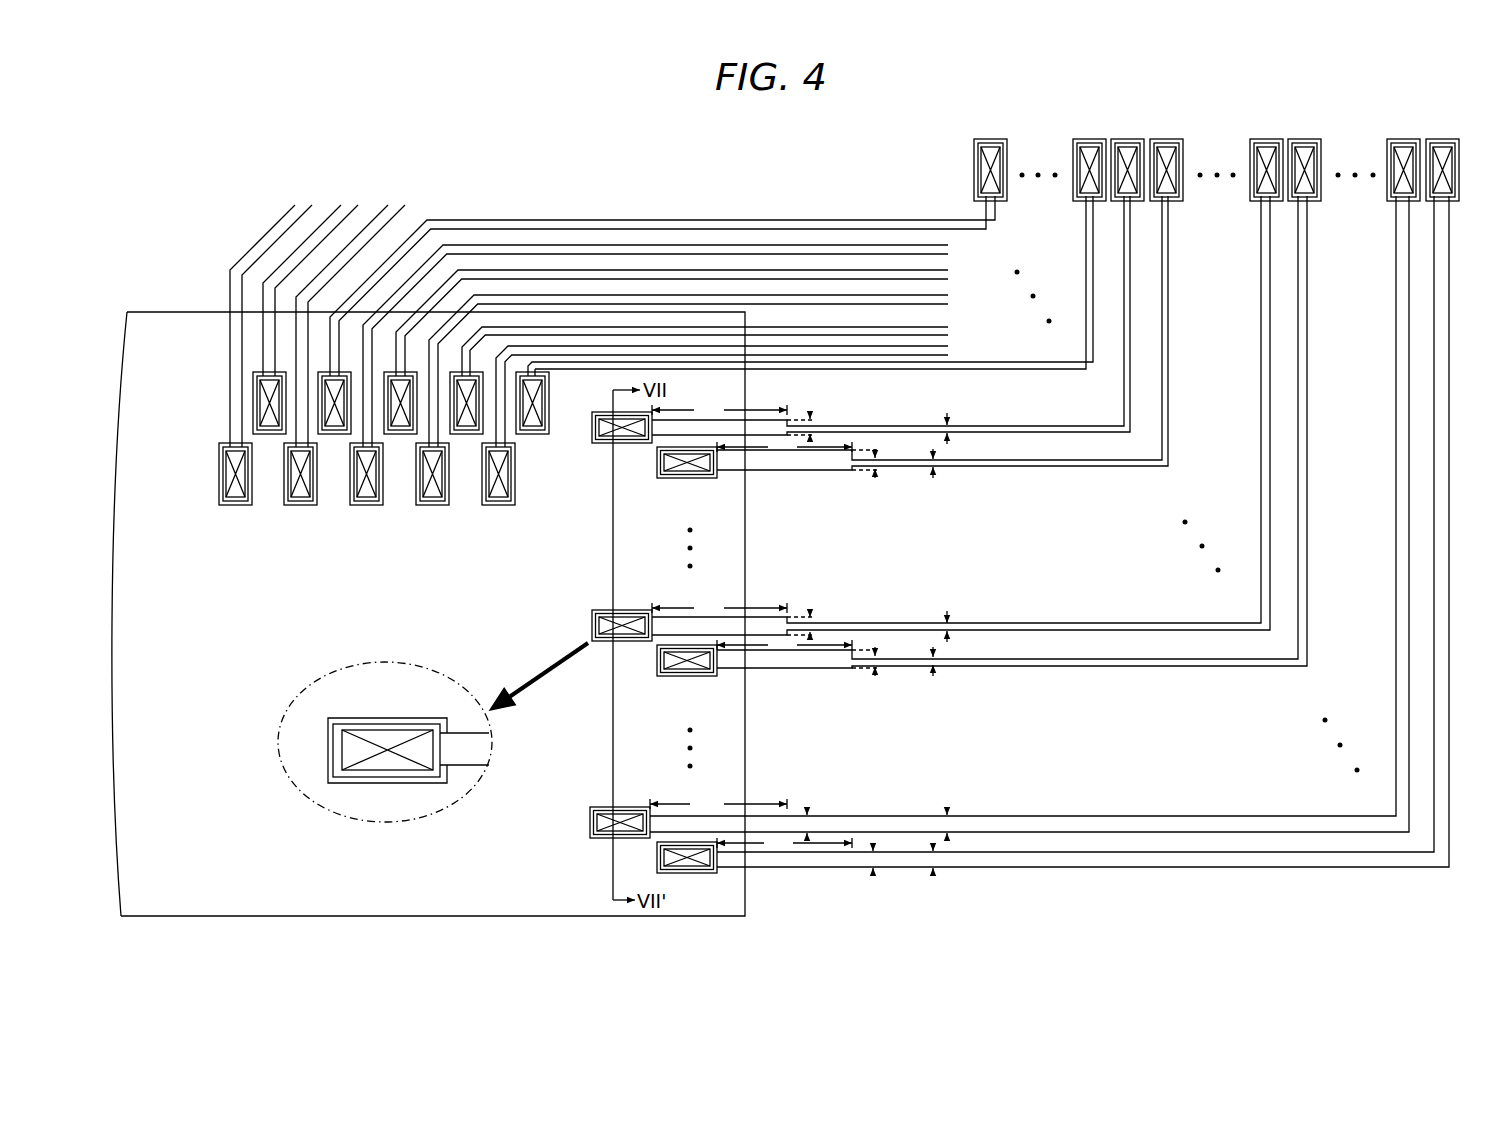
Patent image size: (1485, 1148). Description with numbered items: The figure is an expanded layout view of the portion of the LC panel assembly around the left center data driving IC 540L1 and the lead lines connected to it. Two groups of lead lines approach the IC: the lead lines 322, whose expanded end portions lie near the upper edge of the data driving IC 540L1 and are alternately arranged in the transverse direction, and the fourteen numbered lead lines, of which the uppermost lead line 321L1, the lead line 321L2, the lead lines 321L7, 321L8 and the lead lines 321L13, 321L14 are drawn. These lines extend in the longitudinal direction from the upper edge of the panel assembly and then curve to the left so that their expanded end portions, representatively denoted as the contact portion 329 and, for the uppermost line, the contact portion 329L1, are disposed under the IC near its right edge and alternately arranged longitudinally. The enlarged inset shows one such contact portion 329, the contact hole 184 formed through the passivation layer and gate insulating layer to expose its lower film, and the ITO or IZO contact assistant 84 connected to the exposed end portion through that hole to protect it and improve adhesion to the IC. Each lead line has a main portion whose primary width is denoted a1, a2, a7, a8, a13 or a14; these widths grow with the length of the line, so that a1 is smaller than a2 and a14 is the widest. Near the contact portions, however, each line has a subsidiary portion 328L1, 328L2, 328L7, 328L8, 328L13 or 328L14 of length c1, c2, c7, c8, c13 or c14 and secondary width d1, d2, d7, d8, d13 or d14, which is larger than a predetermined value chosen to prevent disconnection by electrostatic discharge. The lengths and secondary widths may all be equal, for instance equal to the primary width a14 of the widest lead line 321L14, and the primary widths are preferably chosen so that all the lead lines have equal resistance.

The left center data driving IC 540L1 is at (160, 310).
The lead lines 322 is at (778, 217).
The uppermost lead line 321L1 is at (1130, 283).
The lead line 321L2 is at (1169, 320).
The lead line 321L7 is at (1261, 437).
The lead line 321L8 is at (1298, 480).
The lead line 321L13 is at (1396, 634).
The widest lead line 321L14 is at (1434, 678).
The contact portion of uppermost lead line 329L1 is at (600, 413).
The contact assistant 84 is at (593, 433).
The contact hole 184 is at (615, 447).
The contact portion 329 is at (420, 724).
The subsidiary portion 328L1 is at (768, 420).
The subsidiary portion 328L2 is at (780, 471).
The subsidiary portion 328L7 is at (768, 617).
The subsidiary portion 328L8 is at (780, 669).
The subsidiary portion 328L13 is at (768, 816).
The subsidiary portion 328L14 is at (780, 868).
The length of subsidiary portion c1 is at (719, 410).
The secondary width d1 is at (822, 426).
The primary width a1 is at (959, 428).
The length of subsidiary portion c2 is at (784, 447).
The secondary width d2 is at (887, 463).
The primary width a2 is at (945, 463).
The length of subsidiary portion c7 is at (719, 608).
The secondary width d7 is at (822, 624).
The primary width a7 is at (959, 626).
The length of subsidiary portion c8 is at (784, 645).
The secondary width d8 is at (887, 661).
The primary width a8 is at (945, 661).
The length of subsidiary portion c13 is at (718, 804).
The secondary width d13 is at (825, 823).
The primary width a13 is at (964, 823).
The length of subsidiary portion c14 is at (784, 843).
The secondary width d14 is at (891, 859).
The primary width a14 is at (949, 867).